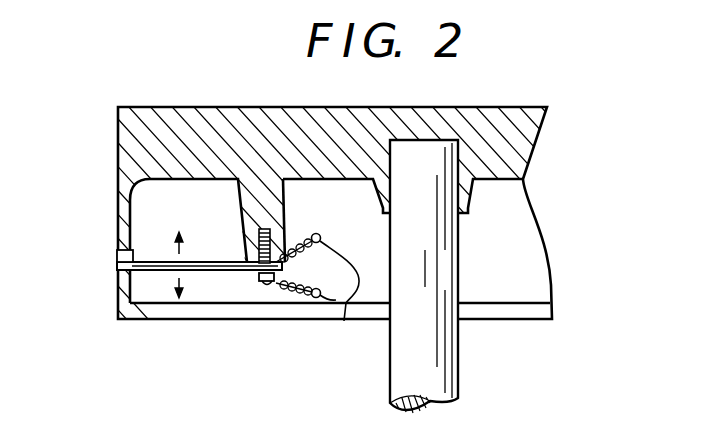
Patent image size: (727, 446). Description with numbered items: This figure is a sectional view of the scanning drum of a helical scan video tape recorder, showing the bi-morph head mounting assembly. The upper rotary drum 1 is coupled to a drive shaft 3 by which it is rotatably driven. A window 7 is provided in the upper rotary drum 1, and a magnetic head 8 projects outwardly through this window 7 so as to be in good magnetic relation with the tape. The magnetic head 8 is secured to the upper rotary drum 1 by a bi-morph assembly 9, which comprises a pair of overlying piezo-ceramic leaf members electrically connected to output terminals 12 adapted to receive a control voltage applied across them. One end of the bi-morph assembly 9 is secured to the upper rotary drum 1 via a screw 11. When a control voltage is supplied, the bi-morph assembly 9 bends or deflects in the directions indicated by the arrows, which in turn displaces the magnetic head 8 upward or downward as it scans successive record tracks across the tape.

The upper rotary drum 1 is at (162, 107).
The drive shaft 3 is at (460, 348).
The window 7 is at (117, 268).
The magnetic head 8 is at (118, 256).
The bi-morph assembly 9 is at (203, 284).
The screw 11 is at (271, 292).
The output terminals 12 is at (336, 298).